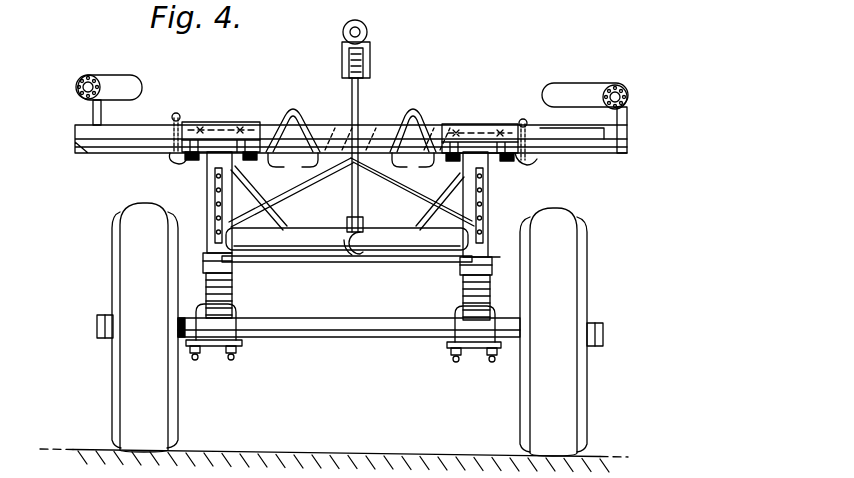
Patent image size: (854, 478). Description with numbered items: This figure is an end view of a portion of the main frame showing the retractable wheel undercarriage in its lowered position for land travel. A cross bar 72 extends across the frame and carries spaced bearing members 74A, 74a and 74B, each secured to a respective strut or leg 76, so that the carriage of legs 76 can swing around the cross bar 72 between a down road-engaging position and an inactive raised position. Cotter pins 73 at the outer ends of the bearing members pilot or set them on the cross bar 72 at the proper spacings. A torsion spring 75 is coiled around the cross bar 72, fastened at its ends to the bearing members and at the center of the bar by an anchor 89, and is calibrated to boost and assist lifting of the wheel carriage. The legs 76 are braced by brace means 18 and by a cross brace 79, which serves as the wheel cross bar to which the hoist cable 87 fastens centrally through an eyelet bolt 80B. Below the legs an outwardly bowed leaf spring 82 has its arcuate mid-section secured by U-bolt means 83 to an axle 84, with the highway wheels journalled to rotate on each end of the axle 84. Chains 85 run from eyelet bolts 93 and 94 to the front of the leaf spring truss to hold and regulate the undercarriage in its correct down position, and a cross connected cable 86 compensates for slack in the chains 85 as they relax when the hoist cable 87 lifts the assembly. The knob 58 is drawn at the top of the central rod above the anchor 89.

The handle knob 58 is at (368, 46).
The anchor 89 is at (363, 110).
The torsion spring 75 is at (295, 119).
The struts or legs 76 is at (207, 199).
The cross bar 72 is at (421, 131).
The bearing member 74B is at (216, 122).
The cotter pins 73 is at (183, 108).
The bearing member 74A is at (180, 157).
The bearing member 74a is at (523, 161).
The chains 85 is at (215, 183).
The diagonal brace 18 is at (252, 191).
The cross connected cable 86 is at (343, 170).
The cross brace 79 is at (298, 228).
The eyelet bolt 93 is at (240, 251).
The eyelet bolt 80B is at (354, 252).
The cable 87 is at (203, 263).
The leaf spring 82 is at (236, 278).
The U-bolt means 83 is at (238, 312).
The axle 84 is at (350, 338).
The eyelet bolt 94 is at (488, 258).